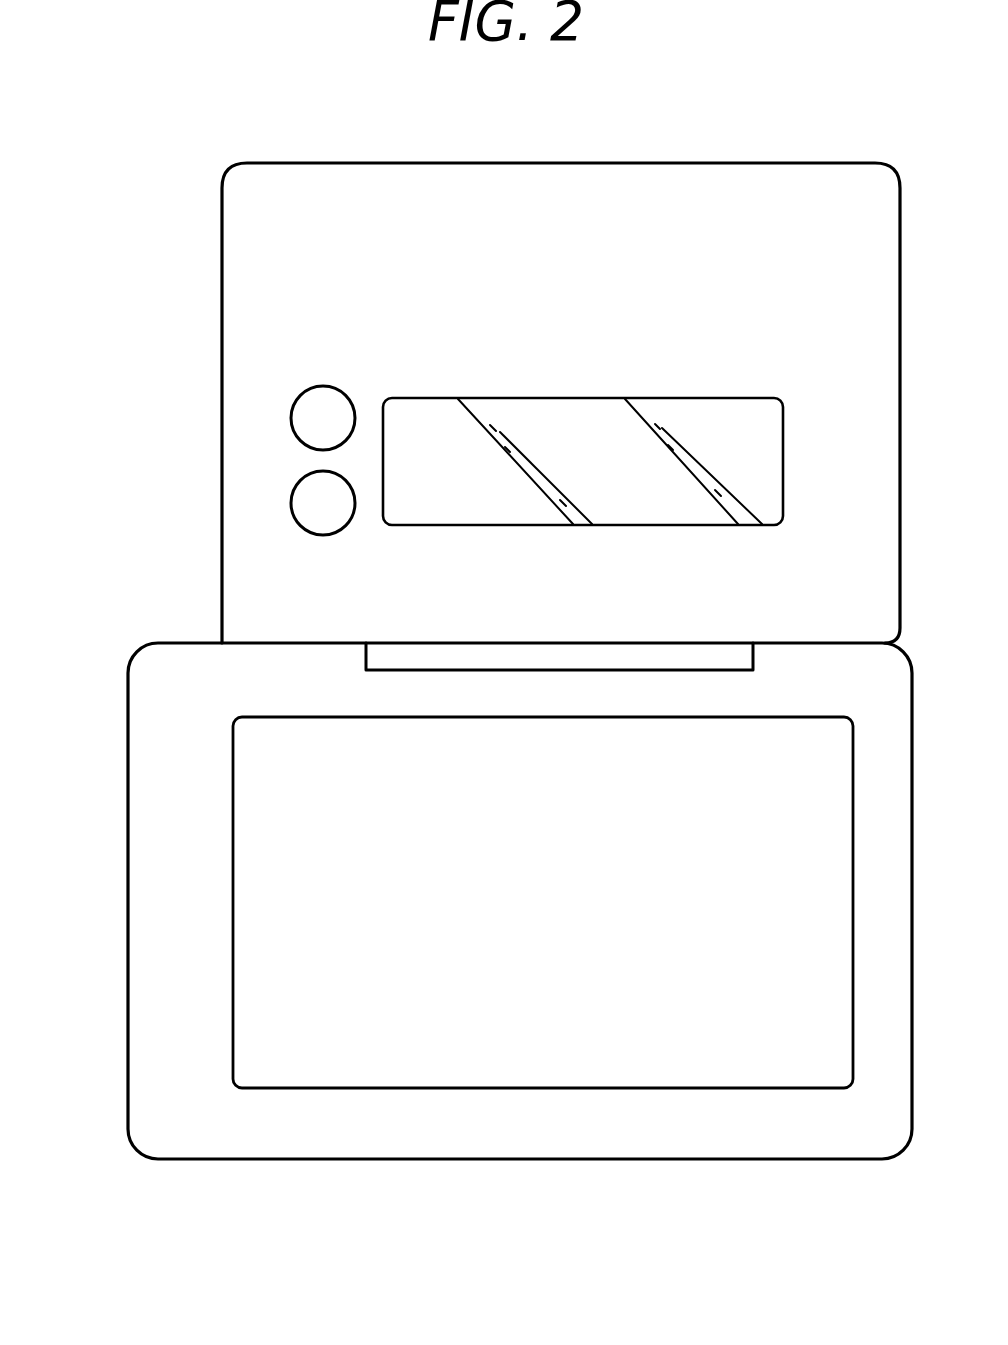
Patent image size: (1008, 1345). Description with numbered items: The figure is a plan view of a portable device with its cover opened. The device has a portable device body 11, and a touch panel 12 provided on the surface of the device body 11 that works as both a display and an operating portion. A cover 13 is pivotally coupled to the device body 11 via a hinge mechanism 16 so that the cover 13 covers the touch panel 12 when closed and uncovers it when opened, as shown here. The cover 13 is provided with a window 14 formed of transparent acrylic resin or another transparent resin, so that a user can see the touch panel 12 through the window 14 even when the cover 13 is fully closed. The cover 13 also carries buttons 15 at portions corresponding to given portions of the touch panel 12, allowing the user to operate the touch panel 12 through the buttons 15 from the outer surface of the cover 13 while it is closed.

The portable device body 11 is at (140, 864).
The touch panel 12 is at (560, 1068).
The cover 13 is at (236, 259).
The window 14 is at (572, 420).
The buttons 15 is at (307, 413).
The hinge mechanism 16 is at (385, 650).